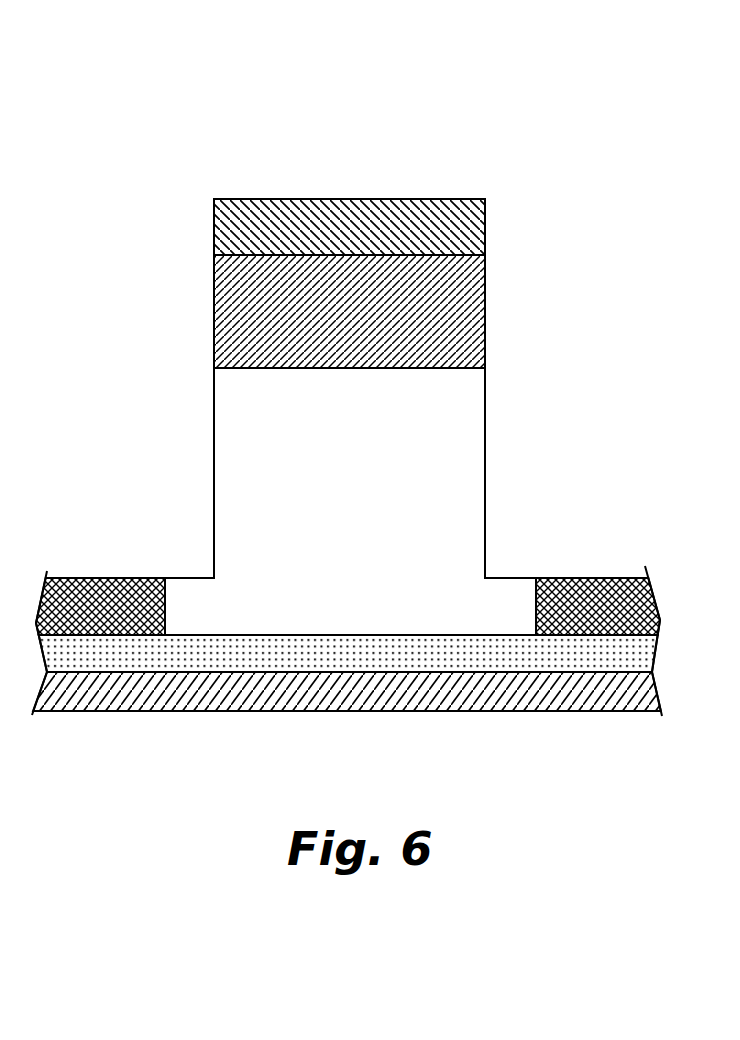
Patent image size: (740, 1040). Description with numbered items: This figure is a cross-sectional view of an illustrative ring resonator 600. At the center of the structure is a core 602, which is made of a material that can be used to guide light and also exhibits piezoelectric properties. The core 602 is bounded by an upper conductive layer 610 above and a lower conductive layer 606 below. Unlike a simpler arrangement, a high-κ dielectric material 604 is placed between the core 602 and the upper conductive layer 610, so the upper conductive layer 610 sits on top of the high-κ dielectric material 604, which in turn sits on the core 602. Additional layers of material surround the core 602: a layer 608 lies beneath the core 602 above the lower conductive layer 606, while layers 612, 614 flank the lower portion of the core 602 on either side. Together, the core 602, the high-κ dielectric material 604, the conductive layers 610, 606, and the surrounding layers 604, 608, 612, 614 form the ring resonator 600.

The ring resonator 600 is at (224, 92).
The core 602 is at (336, 498).
The high-κ dielectric material 604 is at (336, 314).
The lower conductive layer 606 is at (338, 704).
The layer of material surrounding the core 608 is at (338, 664).
The upper conductive layer 610 is at (336, 238).
The layer of material surrounding the core 612 is at (86, 616).
The layer of material surrounding the core 614 is at (581, 616).